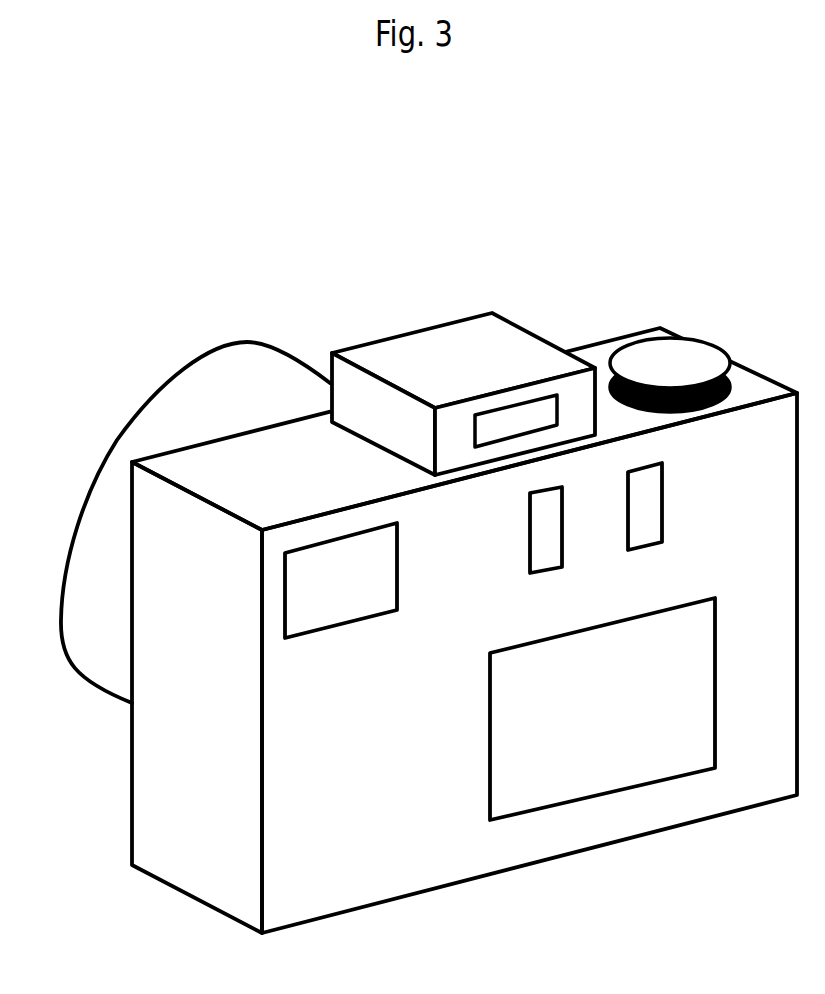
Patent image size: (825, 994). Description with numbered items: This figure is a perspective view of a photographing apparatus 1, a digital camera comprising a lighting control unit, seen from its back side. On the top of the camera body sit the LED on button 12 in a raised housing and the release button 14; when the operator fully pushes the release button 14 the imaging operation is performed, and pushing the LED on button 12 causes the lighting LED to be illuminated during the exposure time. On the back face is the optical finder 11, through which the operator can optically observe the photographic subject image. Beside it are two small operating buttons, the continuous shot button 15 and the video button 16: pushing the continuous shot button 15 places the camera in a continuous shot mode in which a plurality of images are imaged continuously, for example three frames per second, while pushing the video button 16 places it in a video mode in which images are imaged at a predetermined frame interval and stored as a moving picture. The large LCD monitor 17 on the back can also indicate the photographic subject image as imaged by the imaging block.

The photographing apparatus 1 is at (663, 329).
The optical finder 11 is at (398, 567).
The LED on button 12 is at (490, 410).
The release button 14 is at (700, 338).
The continuous shot button 15 is at (663, 505).
The video button 16 is at (563, 532).
The LCD monitor 17 is at (717, 620).